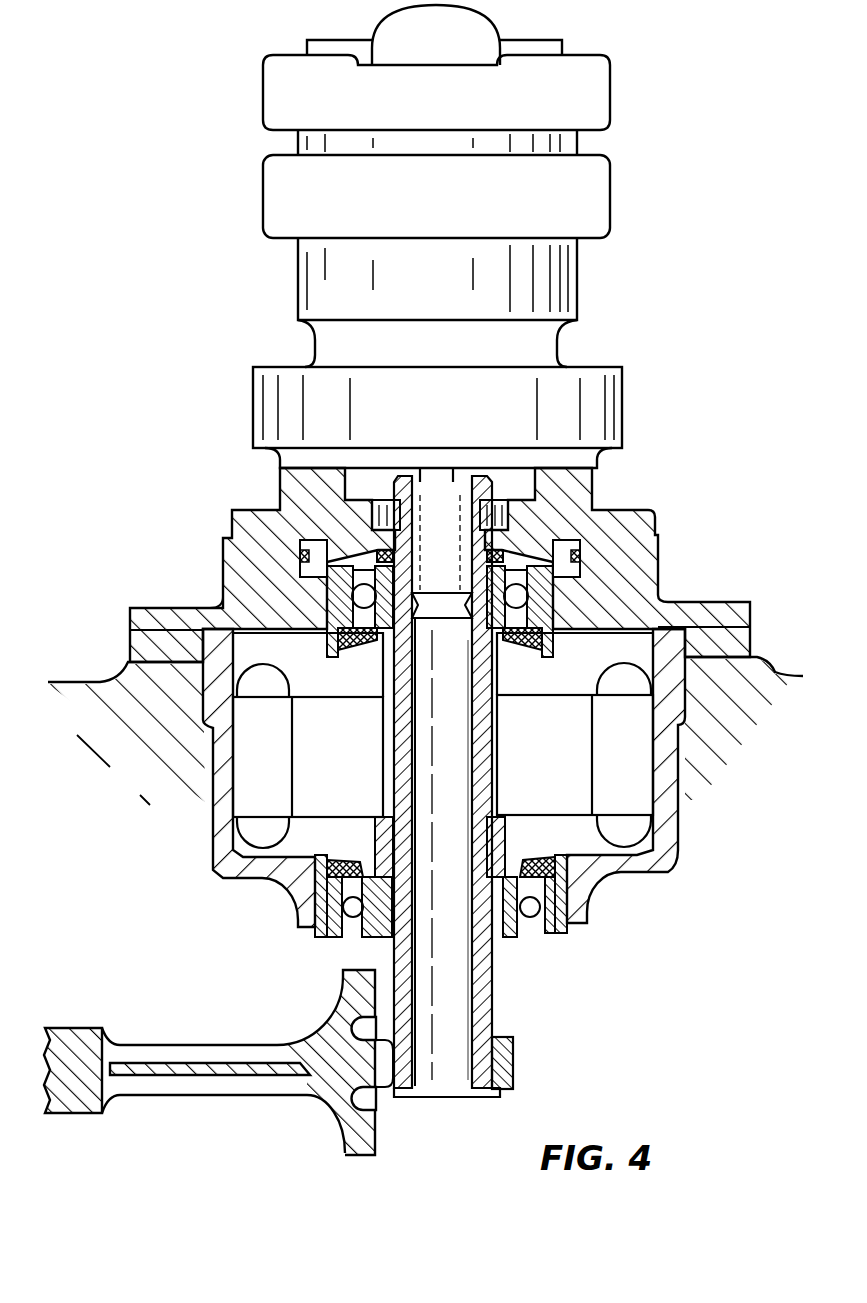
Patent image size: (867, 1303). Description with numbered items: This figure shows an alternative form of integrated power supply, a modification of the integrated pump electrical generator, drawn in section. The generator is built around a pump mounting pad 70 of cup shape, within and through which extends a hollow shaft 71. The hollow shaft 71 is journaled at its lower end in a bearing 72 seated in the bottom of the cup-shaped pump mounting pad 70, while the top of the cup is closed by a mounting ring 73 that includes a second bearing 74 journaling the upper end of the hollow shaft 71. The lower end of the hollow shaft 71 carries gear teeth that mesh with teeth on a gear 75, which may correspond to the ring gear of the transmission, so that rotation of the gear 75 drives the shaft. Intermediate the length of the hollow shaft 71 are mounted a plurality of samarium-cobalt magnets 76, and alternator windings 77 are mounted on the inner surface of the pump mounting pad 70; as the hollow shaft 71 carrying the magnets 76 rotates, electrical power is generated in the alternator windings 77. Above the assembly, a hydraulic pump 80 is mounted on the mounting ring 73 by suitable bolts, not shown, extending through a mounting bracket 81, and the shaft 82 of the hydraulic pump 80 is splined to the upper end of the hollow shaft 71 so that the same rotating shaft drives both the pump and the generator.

The hydraulic pump 80 is at (562, 185).
The mounting bracket 81 is at (637, 525).
The shaft of pump 82 is at (445, 468).
The mounting ring 73 is at (730, 612).
The pump mounting pad 70 is at (737, 648).
The bearing 74 is at (500, 568).
The samarium-cobalt magnets 76 is at (542, 713).
The alternator windings 77 is at (618, 667).
The bearing 72 is at (550, 938).
The hollow shaft 71 is at (490, 1053).
The gear 75 is at (290, 1043).